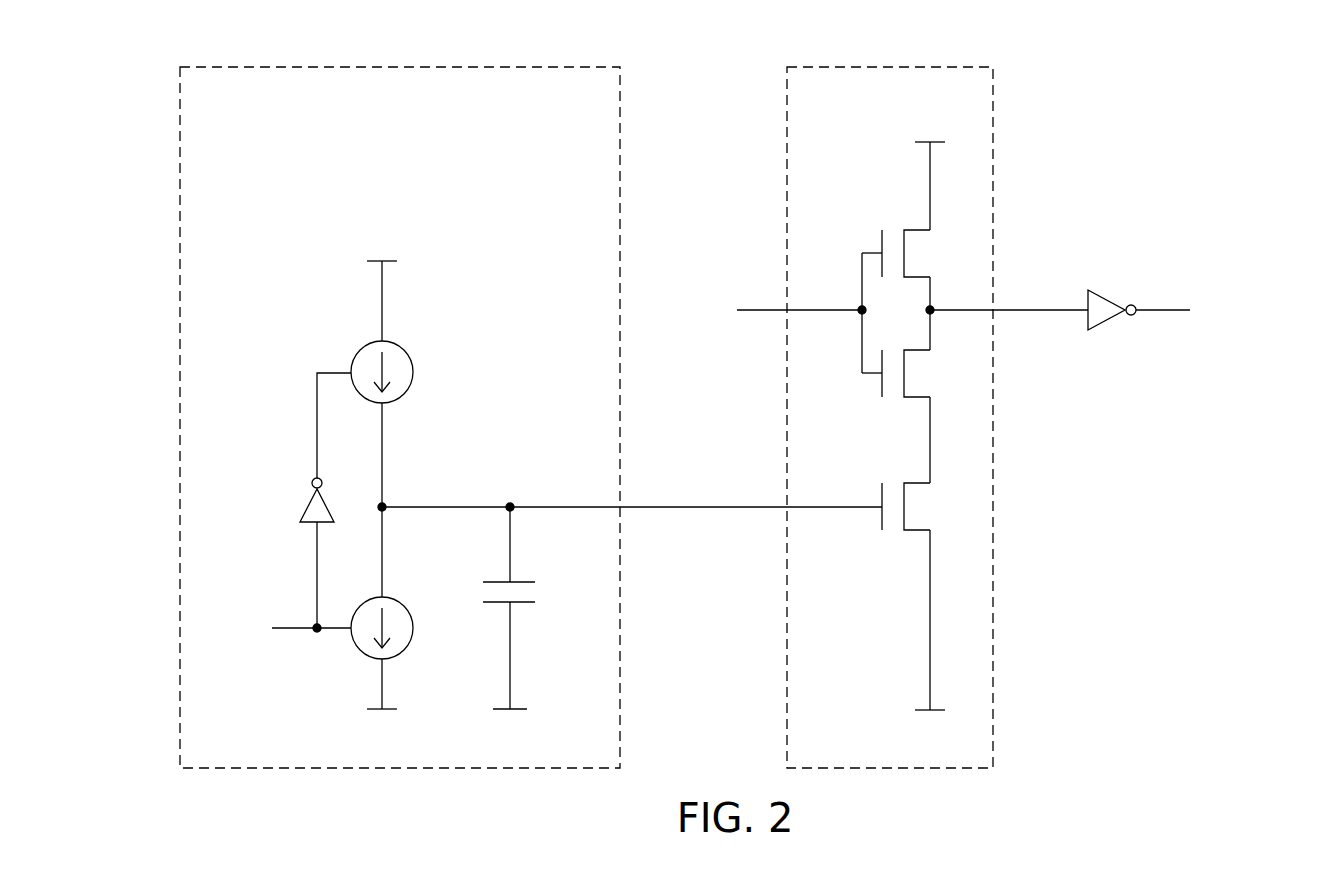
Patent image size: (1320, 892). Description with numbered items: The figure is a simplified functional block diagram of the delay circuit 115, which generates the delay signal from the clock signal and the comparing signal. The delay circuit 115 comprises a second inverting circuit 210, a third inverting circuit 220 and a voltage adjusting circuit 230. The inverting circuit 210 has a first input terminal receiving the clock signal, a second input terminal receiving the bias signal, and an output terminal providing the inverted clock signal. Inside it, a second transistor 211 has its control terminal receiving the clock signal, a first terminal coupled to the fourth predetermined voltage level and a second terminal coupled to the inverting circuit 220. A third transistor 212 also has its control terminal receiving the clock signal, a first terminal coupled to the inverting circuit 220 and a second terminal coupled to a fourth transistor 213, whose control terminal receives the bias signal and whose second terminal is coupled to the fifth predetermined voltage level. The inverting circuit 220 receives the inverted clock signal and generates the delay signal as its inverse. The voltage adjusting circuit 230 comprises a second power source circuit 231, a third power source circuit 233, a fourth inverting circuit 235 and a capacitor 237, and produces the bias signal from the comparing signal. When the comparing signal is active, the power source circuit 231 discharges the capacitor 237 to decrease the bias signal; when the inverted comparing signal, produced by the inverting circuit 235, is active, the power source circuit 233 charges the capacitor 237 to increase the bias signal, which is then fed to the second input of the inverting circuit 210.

The delay circuit 115 is at (1142, 141).
The second inverting circuit 210 is at (787, 133).
The second transistor 211 is at (888, 223).
The third transistor 212 is at (891, 405).
The fourth transistor 213 is at (891, 548).
The third inverting circuit 220 is at (1105, 321).
The voltage adjusting circuit 230 is at (620, 203).
The second power source circuit 231 is at (405, 602).
The third power source circuit 233 is at (405, 350).
The fourth inverting circuit 235 is at (305, 505).
The capacitor 237 is at (532, 590).